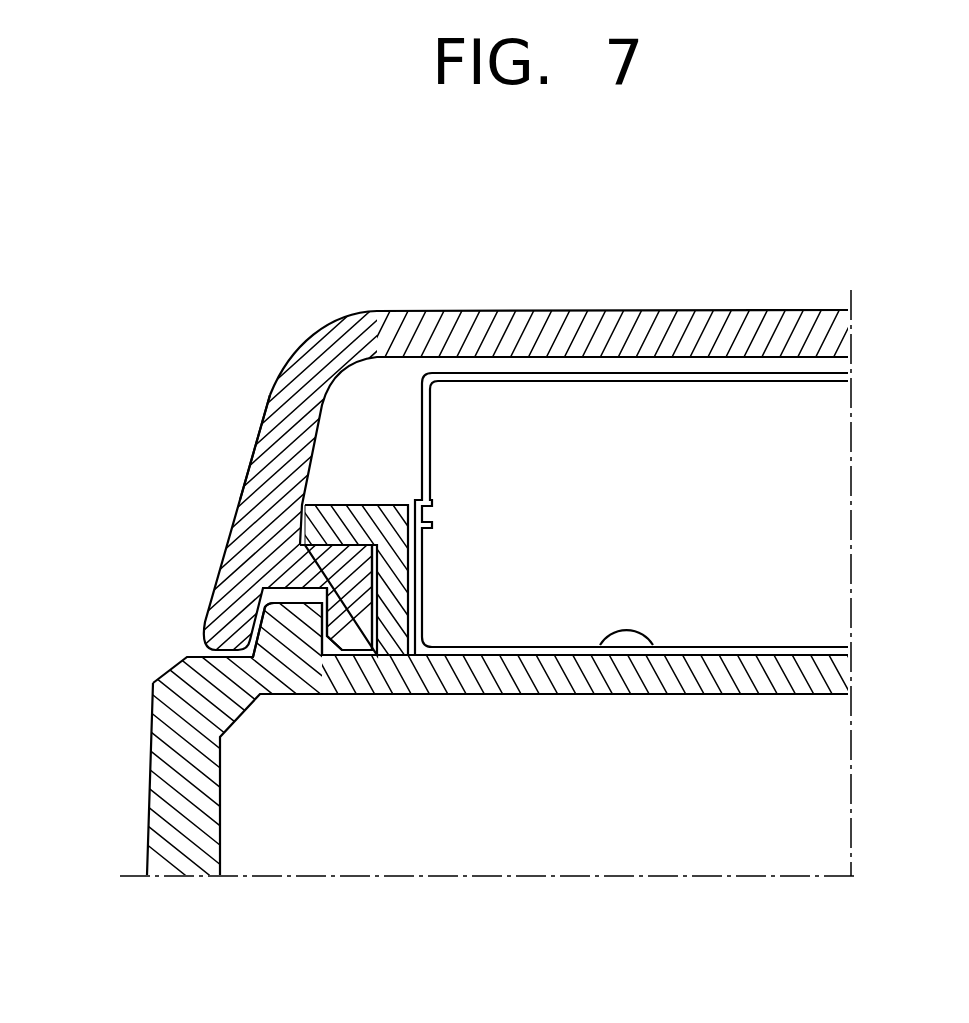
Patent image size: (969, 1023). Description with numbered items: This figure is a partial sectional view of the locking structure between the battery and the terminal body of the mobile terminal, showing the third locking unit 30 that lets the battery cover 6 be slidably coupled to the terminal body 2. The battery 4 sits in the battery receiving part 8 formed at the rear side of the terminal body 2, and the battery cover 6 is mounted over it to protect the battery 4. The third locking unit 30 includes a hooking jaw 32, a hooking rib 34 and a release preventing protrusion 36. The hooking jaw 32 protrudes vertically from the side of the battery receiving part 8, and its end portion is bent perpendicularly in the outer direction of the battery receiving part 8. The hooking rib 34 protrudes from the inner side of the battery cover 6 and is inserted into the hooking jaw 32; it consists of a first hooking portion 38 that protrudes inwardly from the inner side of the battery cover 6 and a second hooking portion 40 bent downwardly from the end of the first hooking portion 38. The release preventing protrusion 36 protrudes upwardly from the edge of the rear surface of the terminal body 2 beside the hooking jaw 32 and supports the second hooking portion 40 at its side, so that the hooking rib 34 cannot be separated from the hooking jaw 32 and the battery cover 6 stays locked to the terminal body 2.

The terminal body 2 is at (172, 777).
The battery 4 is at (590, 395).
The battery cover 6 is at (664, 318).
The battery receiving part 8 is at (660, 655).
The third locking unit 30 is at (174, 624).
The hooking jaw 32 is at (357, 523).
The hooking rib 34 is at (108, 431).
The release preventing protrusion 36 is at (270, 628).
The first hooking portion 38 is at (316, 568).
The second hooking portion 40 is at (347, 606).